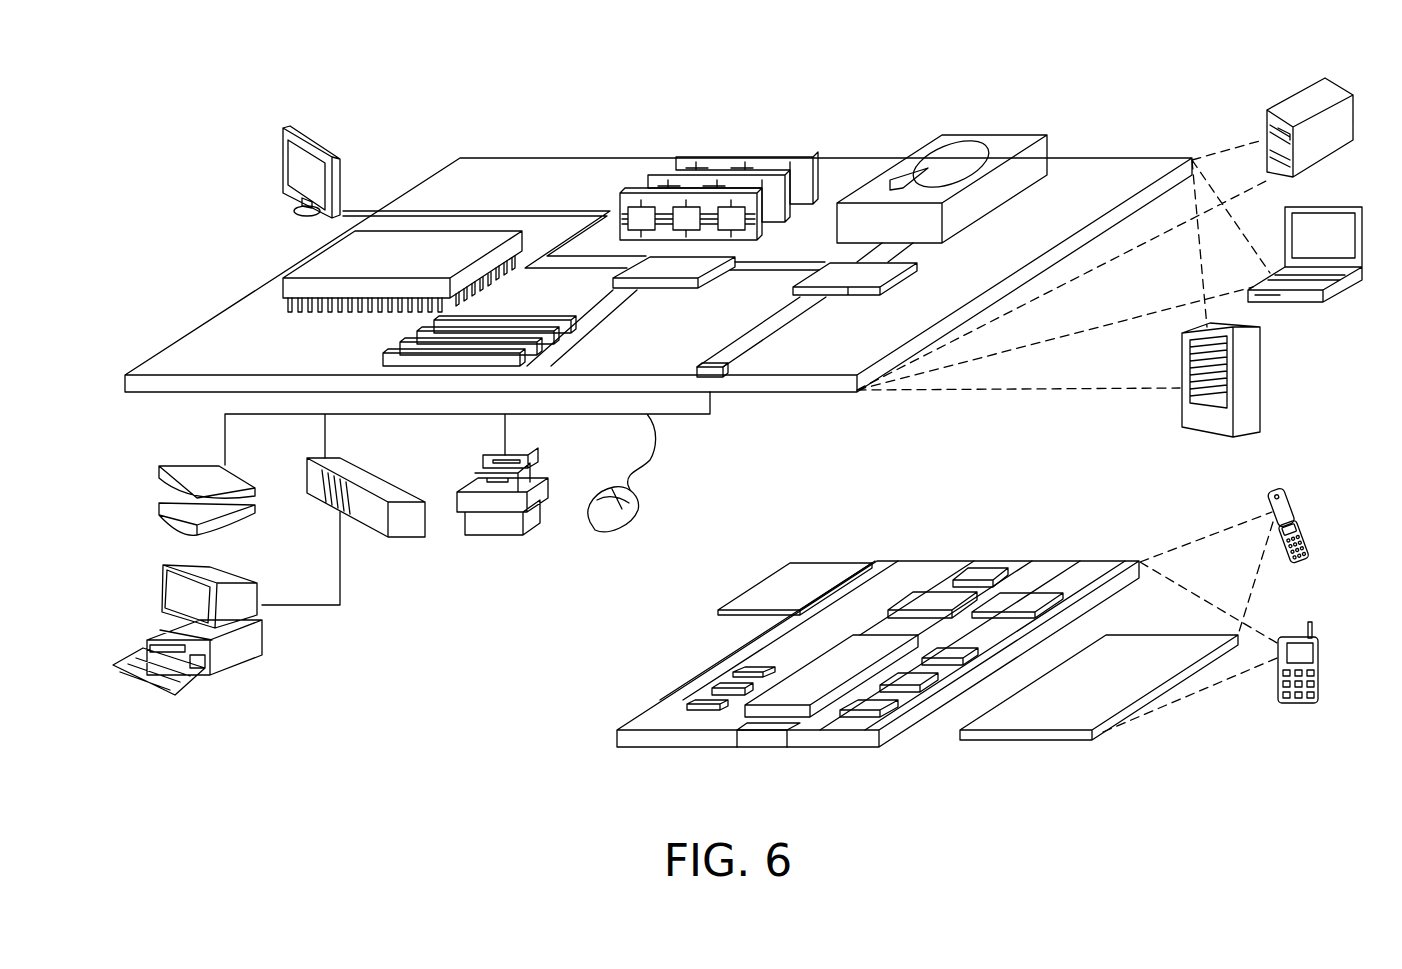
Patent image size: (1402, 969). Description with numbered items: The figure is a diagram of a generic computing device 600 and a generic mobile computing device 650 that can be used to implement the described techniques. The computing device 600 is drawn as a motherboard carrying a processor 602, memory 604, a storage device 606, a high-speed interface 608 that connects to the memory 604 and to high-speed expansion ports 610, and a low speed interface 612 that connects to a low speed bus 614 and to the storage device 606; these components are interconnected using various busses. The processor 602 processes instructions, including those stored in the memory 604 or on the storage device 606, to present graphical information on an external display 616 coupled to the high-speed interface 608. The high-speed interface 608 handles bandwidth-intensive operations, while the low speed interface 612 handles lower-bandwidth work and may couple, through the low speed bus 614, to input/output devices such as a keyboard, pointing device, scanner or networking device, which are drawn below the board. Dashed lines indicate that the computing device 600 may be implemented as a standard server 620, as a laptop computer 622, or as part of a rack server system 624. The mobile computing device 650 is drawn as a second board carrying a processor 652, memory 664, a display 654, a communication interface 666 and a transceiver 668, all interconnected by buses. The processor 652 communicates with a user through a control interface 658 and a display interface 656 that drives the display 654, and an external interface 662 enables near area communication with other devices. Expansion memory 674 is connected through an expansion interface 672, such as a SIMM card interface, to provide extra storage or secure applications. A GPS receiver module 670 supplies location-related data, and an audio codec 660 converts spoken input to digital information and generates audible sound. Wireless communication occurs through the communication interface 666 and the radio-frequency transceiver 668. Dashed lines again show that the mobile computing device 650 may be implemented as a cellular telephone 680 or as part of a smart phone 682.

The computing device 600 is at (413, 109).
The processor 602 is at (308, 258).
The memory 604 is at (753, 152).
The storage device 606 is at (983, 133).
The high-speed interface 608 is at (686, 263).
The high-speed expansion ports 610 is at (407, 340).
The low speed interface 612 is at (828, 272).
The low speed bus 614 is at (715, 363).
The display 616 is at (290, 130).
The standard server 620 is at (1285, 105).
The laptop computer 622 is at (1340, 205).
The rack server system 624 is at (1262, 378).
The mobile computing device 650 is at (577, 752).
The processor 652 is at (801, 680).
The display 654 is at (1137, 650).
The display interface 656 is at (880, 705).
The control interface 658 is at (920, 680).
The audio codec 660 is at (958, 648).
The external interface 662 is at (762, 740).
The memory 664 is at (718, 687).
The communication interface 666 is at (933, 595).
The transceiver 668 is at (1023, 598).
The GPS receiver module 670 is at (983, 572).
The expansion interface 672 is at (860, 577).
The expansion memory 674 is at (777, 575).
The cellular telephone 680 is at (1283, 488).
The smart phone 682 is at (1293, 635).